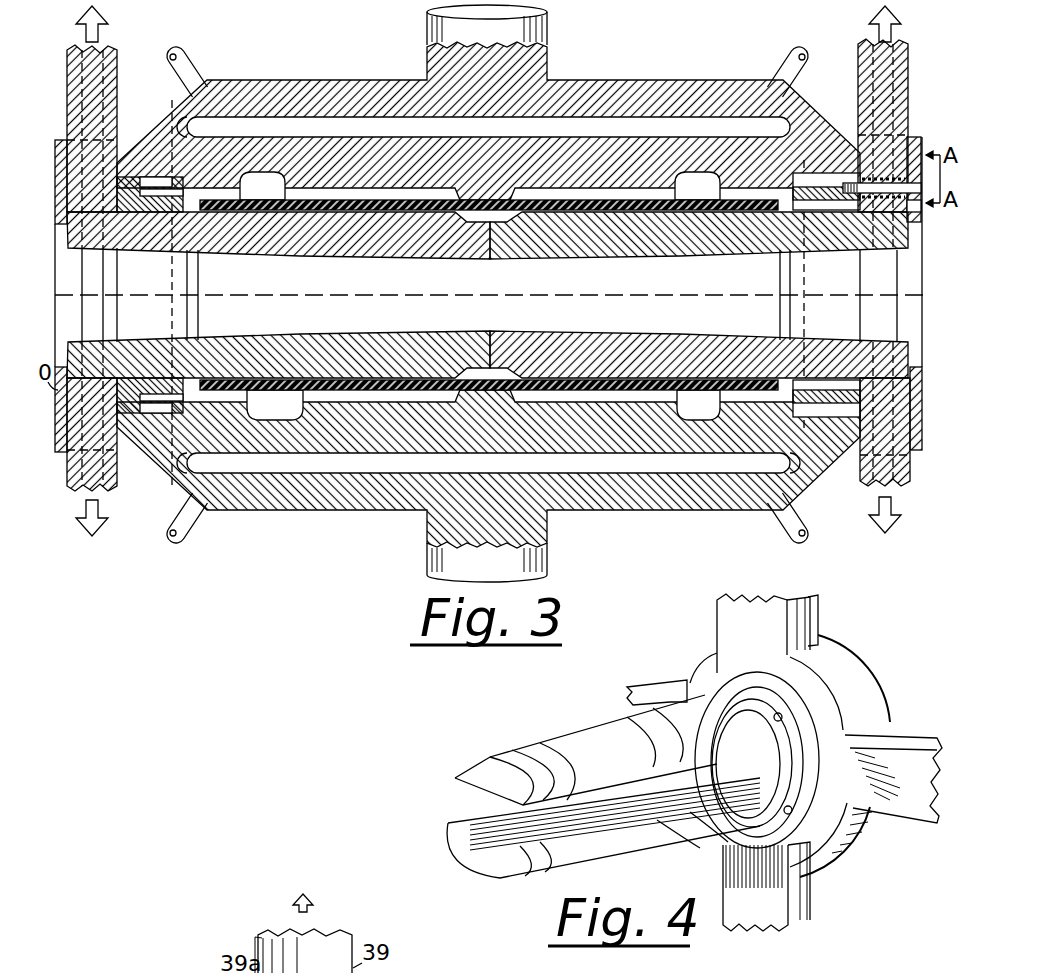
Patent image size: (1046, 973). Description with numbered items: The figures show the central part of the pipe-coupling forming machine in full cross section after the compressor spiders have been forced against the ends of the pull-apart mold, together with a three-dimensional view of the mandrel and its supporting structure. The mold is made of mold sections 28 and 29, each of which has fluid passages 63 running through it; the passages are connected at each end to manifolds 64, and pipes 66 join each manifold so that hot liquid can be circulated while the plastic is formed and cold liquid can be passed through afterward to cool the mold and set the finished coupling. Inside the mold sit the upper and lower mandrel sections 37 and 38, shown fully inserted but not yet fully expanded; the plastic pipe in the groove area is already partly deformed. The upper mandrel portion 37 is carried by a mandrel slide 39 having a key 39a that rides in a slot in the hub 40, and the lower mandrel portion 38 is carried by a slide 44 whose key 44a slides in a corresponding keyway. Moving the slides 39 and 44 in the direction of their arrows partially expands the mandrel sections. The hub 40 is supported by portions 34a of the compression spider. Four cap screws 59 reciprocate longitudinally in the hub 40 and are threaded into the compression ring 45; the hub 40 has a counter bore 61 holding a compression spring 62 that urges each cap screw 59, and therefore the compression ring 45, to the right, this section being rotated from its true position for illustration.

In FIG. 3, the mold section 28 is at (258, 512).
In FIG. 3, the mold section 29 is at (293, 80).
In FIG. 4, the portions of the compression spider 34a is at (920, 735).
In FIG. 3, the upper mandrel portion 37 is at (354, 258).
In FIG. 4, the upper mandrel portion 37 is at (566, 733).
In FIG. 3, the lower mandrel portion 38 is at (376, 333).
In FIG. 4, the lower mandrel portion 38 is at (607, 858).
In FIG. 3, the mandrel slide 39 is at (118, 70).
In FIG. 4, the mandrel slide 39 is at (780, 598).
In FIG. 4, the key 39a is at (818, 618).
In FIG. 3, the hub 40 is at (930, 130).
In FIG. 4, the hub 40 is at (868, 690).
In FIG. 3, the slide 44 is at (72, 486).
In FIG. 4, the slide 44 is at (822, 893).
In FIG. 4, the key 44a is at (812, 928).
In FIG. 3, the compression ring 45 is at (815, 188).
In FIG. 4, the compression ring 45 is at (724, 862).
In FIG. 3, the cap screw 59 is at (918, 170).
In FIG. 3, the counter bore 61 is at (902, 218).
In FIG. 3, the compression spring 62 is at (918, 210).
In FIG. 3, the fluid passage 63 is at (488, 297).
In FIG. 3, the manifold 64 is at (488, 297).
In FIG. 3, the pipe 66 is at (185, 60).